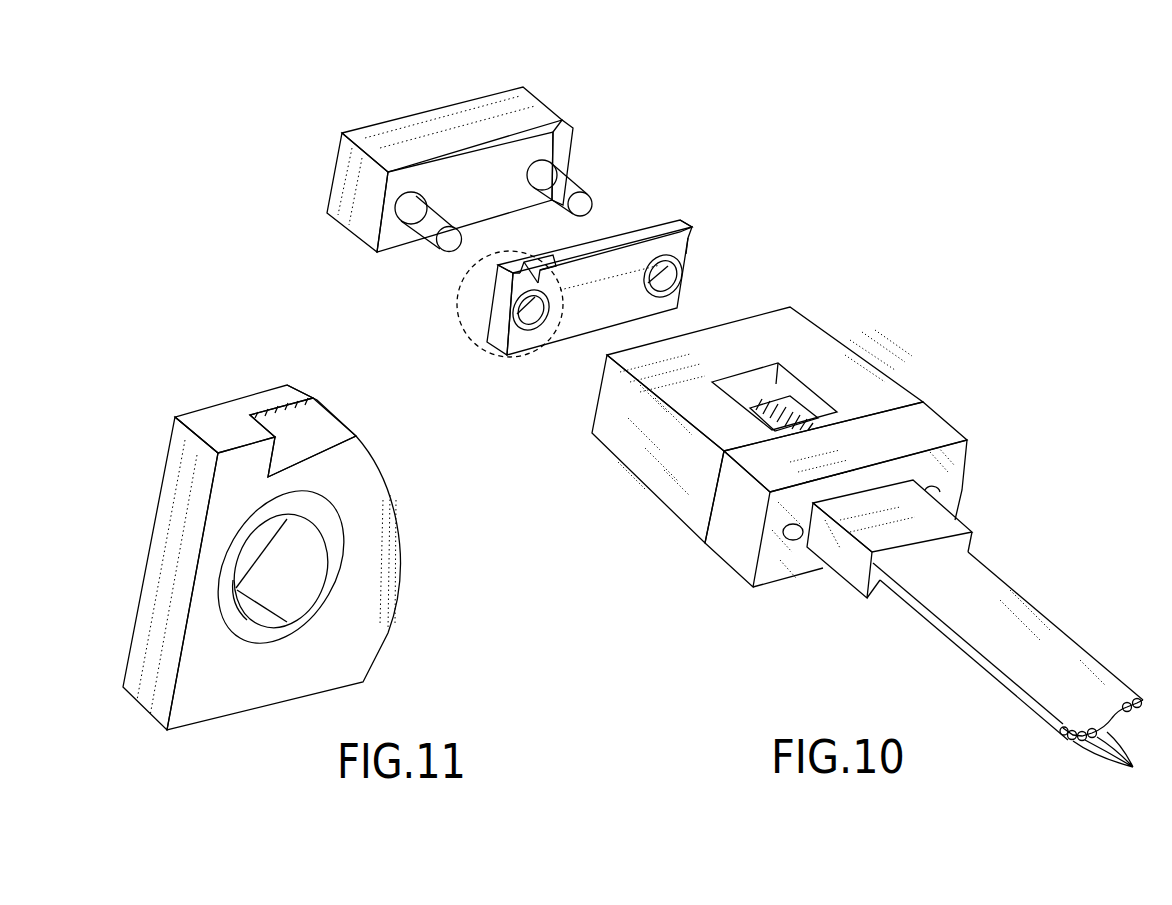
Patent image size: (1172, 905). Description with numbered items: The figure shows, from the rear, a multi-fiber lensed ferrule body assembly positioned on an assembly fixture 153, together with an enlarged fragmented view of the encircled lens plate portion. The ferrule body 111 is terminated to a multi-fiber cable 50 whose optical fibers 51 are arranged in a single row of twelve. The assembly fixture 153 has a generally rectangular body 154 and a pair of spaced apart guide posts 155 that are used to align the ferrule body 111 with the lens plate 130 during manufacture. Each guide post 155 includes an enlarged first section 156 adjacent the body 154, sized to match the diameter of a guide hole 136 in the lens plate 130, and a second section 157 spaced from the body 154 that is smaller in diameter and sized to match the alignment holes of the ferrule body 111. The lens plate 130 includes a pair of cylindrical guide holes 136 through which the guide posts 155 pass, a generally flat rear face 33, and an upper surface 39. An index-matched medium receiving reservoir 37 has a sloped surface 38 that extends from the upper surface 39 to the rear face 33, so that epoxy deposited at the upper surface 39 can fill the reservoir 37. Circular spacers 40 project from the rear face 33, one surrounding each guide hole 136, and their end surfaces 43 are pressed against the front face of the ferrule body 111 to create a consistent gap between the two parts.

In FIG. 10, the assembly fixture 153 is at (540, 108).
In FIG. 10, the body 154 is at (500, 102).
In FIG. 10, the enlarged first section 156 is at (562, 128).
In FIG. 10, the second section 157 is at (575, 182).
In FIG. 10, the guide posts 155 is at (593, 208).
In FIG. 10, the lens plate 130 is at (690, 245).
In FIG. 11, the lens plate 130 is at (168, 537).
In FIG. 10, the index-matched medium receiving reservoir 37 is at (607, 247).
In FIG. 11, the index-matched medium receiving reservoir 37 is at (298, 425).
In FIG. 10, the upper surface 39 is at (686, 222).
In FIG. 11, the upper surface 39 is at (218, 423).
In FIG. 10, the guide holes 136 is at (665, 277).
In FIG. 11, the guide holes 136 is at (297, 565).
In FIG. 10, the end surfaces 43 is at (530, 347).
In FIG. 11, the end surfaces 43 is at (241, 627).
In FIG. 10, the spacers 40 is at (512, 345).
In FIG. 11, the spacers 40 is at (222, 587).
In FIG. 11, the sloped surface 38 is at (357, 438).
In FIG. 11, the rear face 33 is at (360, 643).
In FIG. 10, the ferrule body 111 is at (847, 370).
In FIG. 10, the multi-fiber cable 50 is at (1042, 617).
In FIG. 10, the optical fibers 51 is at (1116, 756).